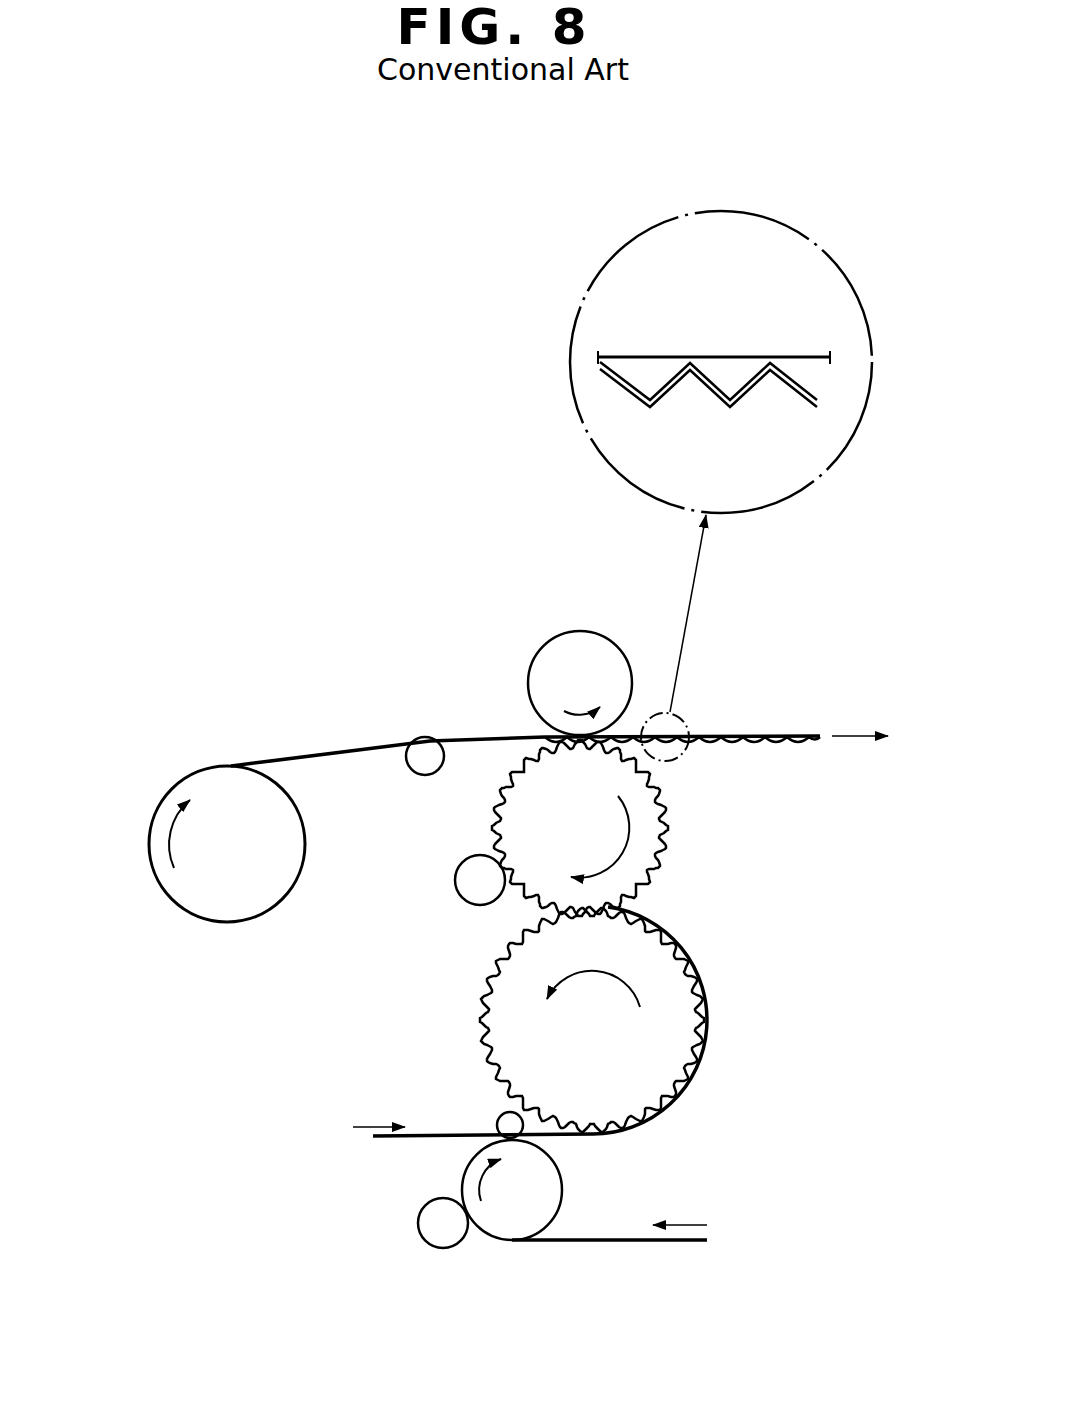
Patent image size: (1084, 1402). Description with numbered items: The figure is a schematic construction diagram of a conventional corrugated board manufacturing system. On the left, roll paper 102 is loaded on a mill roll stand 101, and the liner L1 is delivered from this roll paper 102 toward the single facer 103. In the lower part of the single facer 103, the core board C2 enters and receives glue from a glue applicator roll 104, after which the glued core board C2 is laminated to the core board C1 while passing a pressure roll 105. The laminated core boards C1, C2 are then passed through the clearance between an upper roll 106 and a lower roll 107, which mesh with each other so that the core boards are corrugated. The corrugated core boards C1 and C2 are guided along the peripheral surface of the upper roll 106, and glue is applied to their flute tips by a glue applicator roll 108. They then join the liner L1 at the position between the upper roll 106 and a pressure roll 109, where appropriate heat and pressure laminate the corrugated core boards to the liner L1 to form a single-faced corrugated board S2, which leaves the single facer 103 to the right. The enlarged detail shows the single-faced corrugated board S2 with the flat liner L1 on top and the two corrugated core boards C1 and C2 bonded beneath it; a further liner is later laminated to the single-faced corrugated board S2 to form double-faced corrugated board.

The mill roll stand 101 is at (222, 697).
The roll paper 102 is at (227, 916).
The single facer 103 is at (550, 605).
The glue applicator roll 104 is at (450, 1248).
The pressure roll 105 is at (558, 1186).
The upper roll 106 is at (655, 835).
The lower roll 107 is at (700, 1000).
The glue applicator roll 108 is at (455, 880).
The pressure roll 109 is at (603, 652).
The liner L1 is at (641, 303).
The single-faced corrugated board S2 is at (738, 270).
The core board C1 is at (770, 318).
The core board C2 is at (608, 1243).